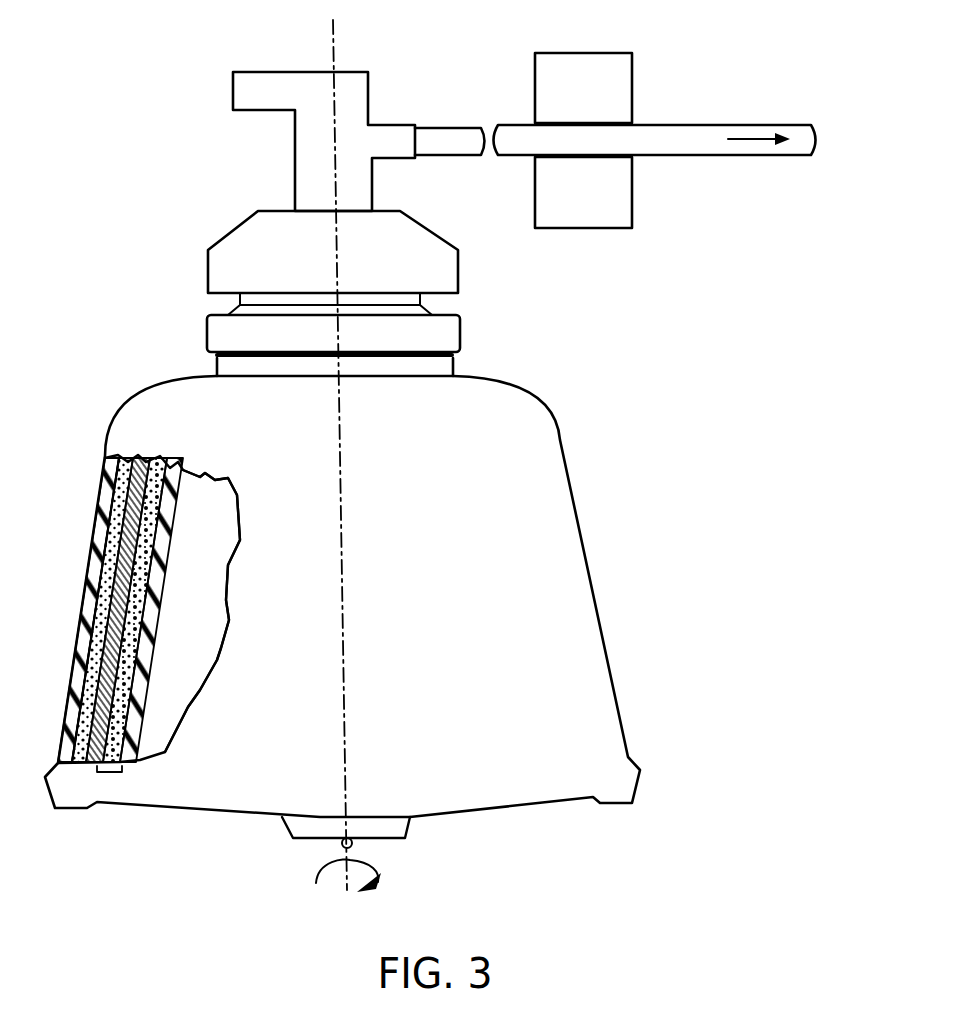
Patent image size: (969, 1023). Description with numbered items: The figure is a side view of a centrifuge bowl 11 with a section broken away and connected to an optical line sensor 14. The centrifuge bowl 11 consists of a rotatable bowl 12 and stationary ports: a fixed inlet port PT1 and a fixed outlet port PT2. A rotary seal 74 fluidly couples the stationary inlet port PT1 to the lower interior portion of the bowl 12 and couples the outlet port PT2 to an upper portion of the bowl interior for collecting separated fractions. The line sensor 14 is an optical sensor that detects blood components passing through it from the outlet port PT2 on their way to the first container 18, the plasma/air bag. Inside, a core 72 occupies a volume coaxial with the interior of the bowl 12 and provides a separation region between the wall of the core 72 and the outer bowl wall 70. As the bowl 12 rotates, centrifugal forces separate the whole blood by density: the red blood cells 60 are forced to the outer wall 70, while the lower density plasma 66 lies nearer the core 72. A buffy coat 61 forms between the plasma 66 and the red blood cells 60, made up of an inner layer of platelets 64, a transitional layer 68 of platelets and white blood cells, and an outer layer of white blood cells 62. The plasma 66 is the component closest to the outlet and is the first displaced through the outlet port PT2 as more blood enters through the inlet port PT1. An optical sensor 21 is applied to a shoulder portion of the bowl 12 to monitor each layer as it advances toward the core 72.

The inlet port PT1 is at (264, 71).
The outlet port PT2 is at (397, 124).
The line sensor 14 is at (580, 52).
The first container 18 is at (657, 94).
The centrifuge bowl 11 is at (590, 356).
The rotatable bowl 12 is at (573, 480).
The rotary seal 74 is at (425, 297).
The optical sensor 21 is at (158, 370).
The outer bowl wall 70 is at (101, 497).
The red blood cells 60 is at (97, 578).
The outer layer of white blood cells 62 is at (100, 622).
The inner layer of platelets 64 is at (103, 685).
The plasma 66 is at (150, 610).
The transitional layer 68 is at (127, 667).
The core 72 is at (172, 535).
The buffy coat 61 is at (110, 776).